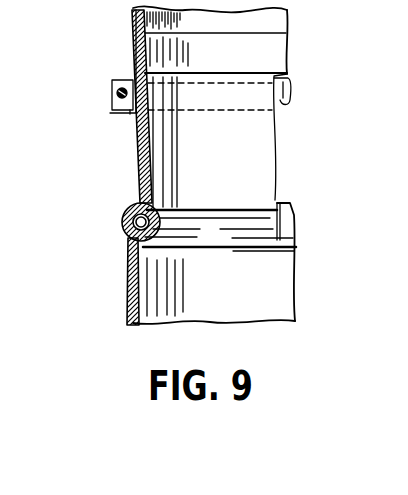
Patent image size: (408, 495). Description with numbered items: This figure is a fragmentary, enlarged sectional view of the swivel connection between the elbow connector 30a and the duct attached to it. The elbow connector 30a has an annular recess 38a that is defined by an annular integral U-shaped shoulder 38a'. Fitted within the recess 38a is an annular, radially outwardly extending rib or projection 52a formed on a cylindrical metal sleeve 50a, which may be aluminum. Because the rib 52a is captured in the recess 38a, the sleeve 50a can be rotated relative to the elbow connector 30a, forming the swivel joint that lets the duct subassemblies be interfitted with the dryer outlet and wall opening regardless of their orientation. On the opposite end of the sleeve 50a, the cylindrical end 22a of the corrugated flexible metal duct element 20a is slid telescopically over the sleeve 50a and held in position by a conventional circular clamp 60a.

The corrugated flexible metal duct element 20a is at (135, 14).
The cylindrical end of duct 22a is at (135, 59).
The circular clamp 60a is at (112, 110).
The cylindrical sleeve 50a is at (140, 162).
The annular radially outwardly extending rib 52a is at (134, 211).
The annular integral U-shaped shoulder 38a' is at (87, 237).
The annular recess 38a is at (182, 271).
The elbow connector 30a is at (133, 317).